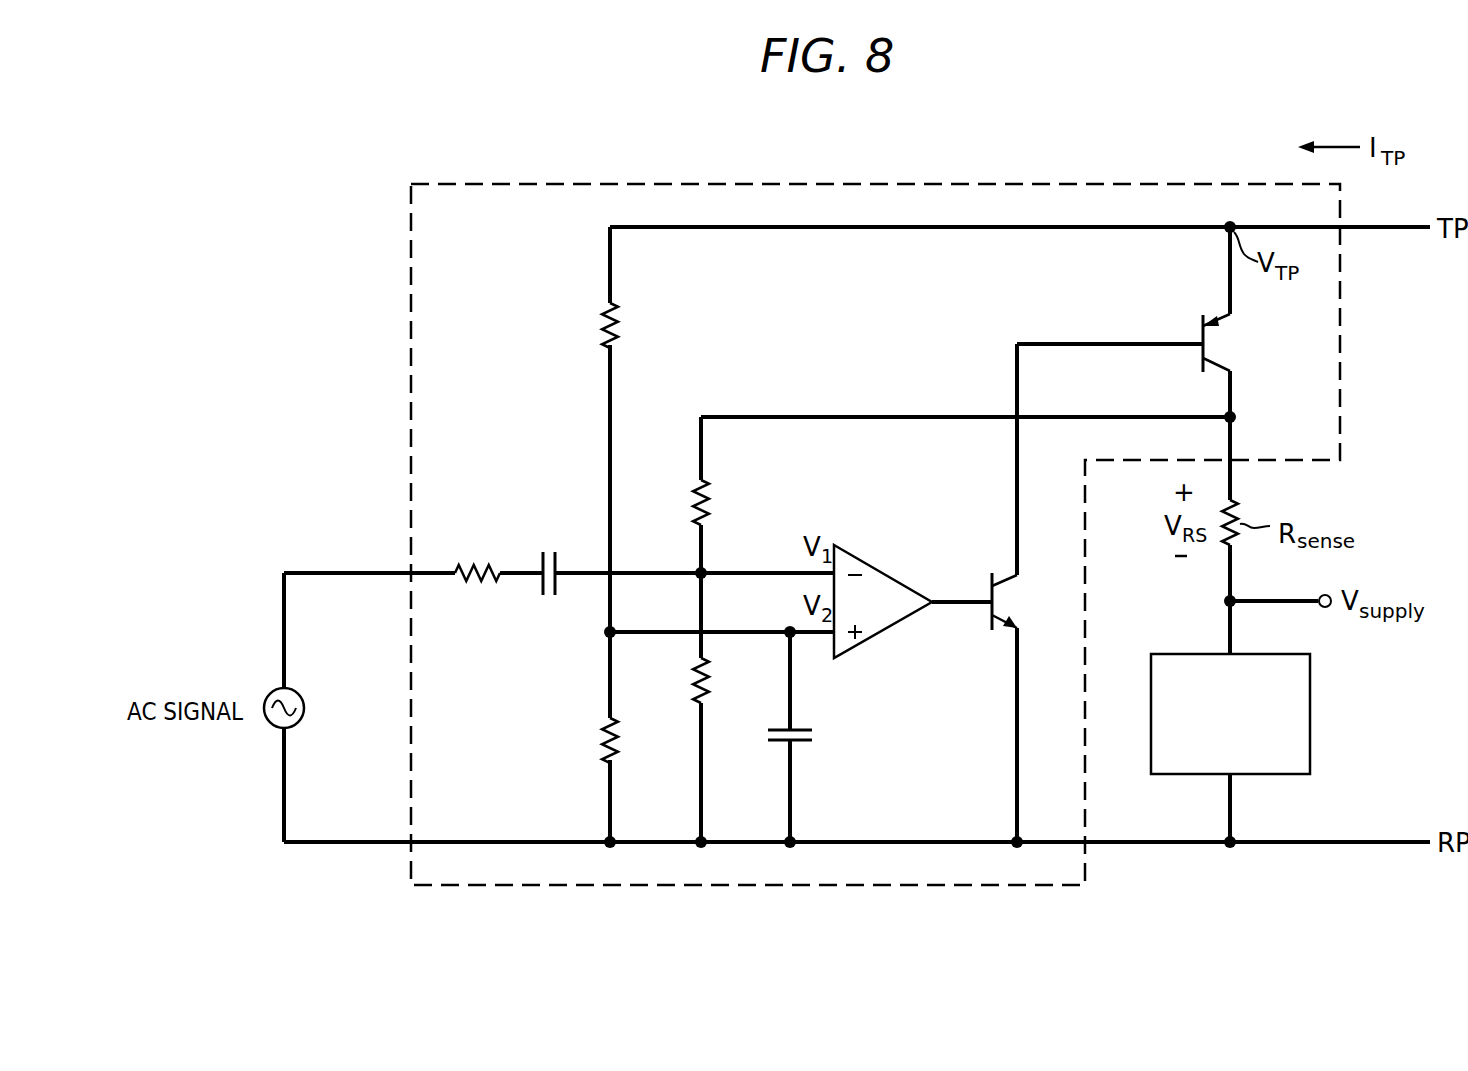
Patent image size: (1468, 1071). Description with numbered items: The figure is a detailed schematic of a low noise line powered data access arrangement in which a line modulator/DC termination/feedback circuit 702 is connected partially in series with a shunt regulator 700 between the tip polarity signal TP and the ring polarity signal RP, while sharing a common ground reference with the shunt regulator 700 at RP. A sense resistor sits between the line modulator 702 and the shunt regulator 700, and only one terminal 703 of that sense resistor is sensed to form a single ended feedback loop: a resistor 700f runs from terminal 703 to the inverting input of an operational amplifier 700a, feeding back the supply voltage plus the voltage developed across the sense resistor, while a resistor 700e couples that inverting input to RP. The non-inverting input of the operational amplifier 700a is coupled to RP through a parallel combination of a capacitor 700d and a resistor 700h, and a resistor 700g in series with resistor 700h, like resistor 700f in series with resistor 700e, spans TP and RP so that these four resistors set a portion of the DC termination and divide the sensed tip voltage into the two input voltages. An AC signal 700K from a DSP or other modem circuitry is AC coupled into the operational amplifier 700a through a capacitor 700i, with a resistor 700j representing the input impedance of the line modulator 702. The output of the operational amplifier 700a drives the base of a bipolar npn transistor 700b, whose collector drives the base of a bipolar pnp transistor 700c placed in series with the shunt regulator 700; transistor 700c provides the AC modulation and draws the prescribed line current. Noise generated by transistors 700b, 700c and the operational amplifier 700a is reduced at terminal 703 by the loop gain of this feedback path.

The shunt regulator 700 is at (1312, 712).
The line modulator 702 is at (920, 886).
The terminal 703 is at (1238, 415).
The operational amplifier 700a is at (884, 572).
The bipolar npn transistor 700b is at (1000, 626).
The bipolar pnp transistor 700c is at (1203, 325).
The capacitor 700d is at (814, 735).
The resistor 700e is at (711, 680).
The resistor 700f is at (692, 496).
The resistor 700g is at (620, 324).
The resistor 700h is at (620, 742).
The capacitor 700i is at (547, 548).
The resistor 700j is at (474, 585).
The AC signal 700K is at (305, 708).